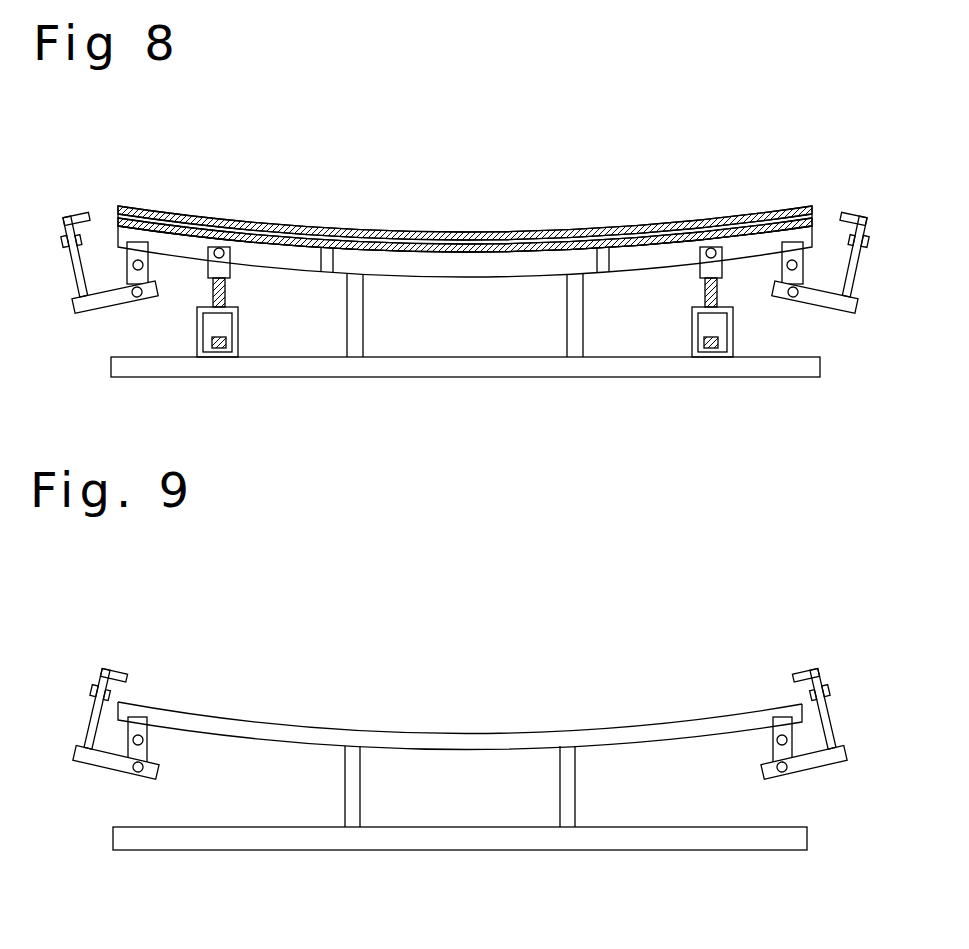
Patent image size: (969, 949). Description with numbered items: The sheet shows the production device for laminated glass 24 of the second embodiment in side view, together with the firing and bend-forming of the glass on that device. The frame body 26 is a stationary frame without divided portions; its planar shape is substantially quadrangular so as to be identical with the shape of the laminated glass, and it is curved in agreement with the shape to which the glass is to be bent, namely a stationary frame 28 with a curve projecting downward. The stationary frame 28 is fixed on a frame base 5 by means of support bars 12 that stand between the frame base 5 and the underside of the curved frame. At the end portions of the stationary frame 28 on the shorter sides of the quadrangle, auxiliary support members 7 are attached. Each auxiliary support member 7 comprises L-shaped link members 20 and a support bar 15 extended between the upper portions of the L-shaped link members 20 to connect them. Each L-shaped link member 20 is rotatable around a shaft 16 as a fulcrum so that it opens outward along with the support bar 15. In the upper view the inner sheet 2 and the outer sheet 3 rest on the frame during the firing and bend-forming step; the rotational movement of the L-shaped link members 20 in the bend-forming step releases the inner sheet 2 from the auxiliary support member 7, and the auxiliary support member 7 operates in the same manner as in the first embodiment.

In FIG. 8, the inner sheet 2 is at (280, 222).
In FIG. 8, the outer sheet 3 is at (204, 217).
In FIG. 9, the frame base 5 is at (176, 838).
In FIG. 9, the auxiliary support member 7 is at (85, 698).
In FIG. 9, the support bar 12 is at (360, 779).
In FIG. 9, the support bar 15 is at (122, 668).
In FIG. 9, the shaft 16 is at (133, 773).
In FIG. 9, the L-shaped link member 20 is at (88, 724).
In FIG. 9, the production device for laminated glass 24 is at (460, 656).
In FIG. 9, the frame body 26 is at (556, 722).
In FIG. 9, the stationary frame 28 is at (472, 735).